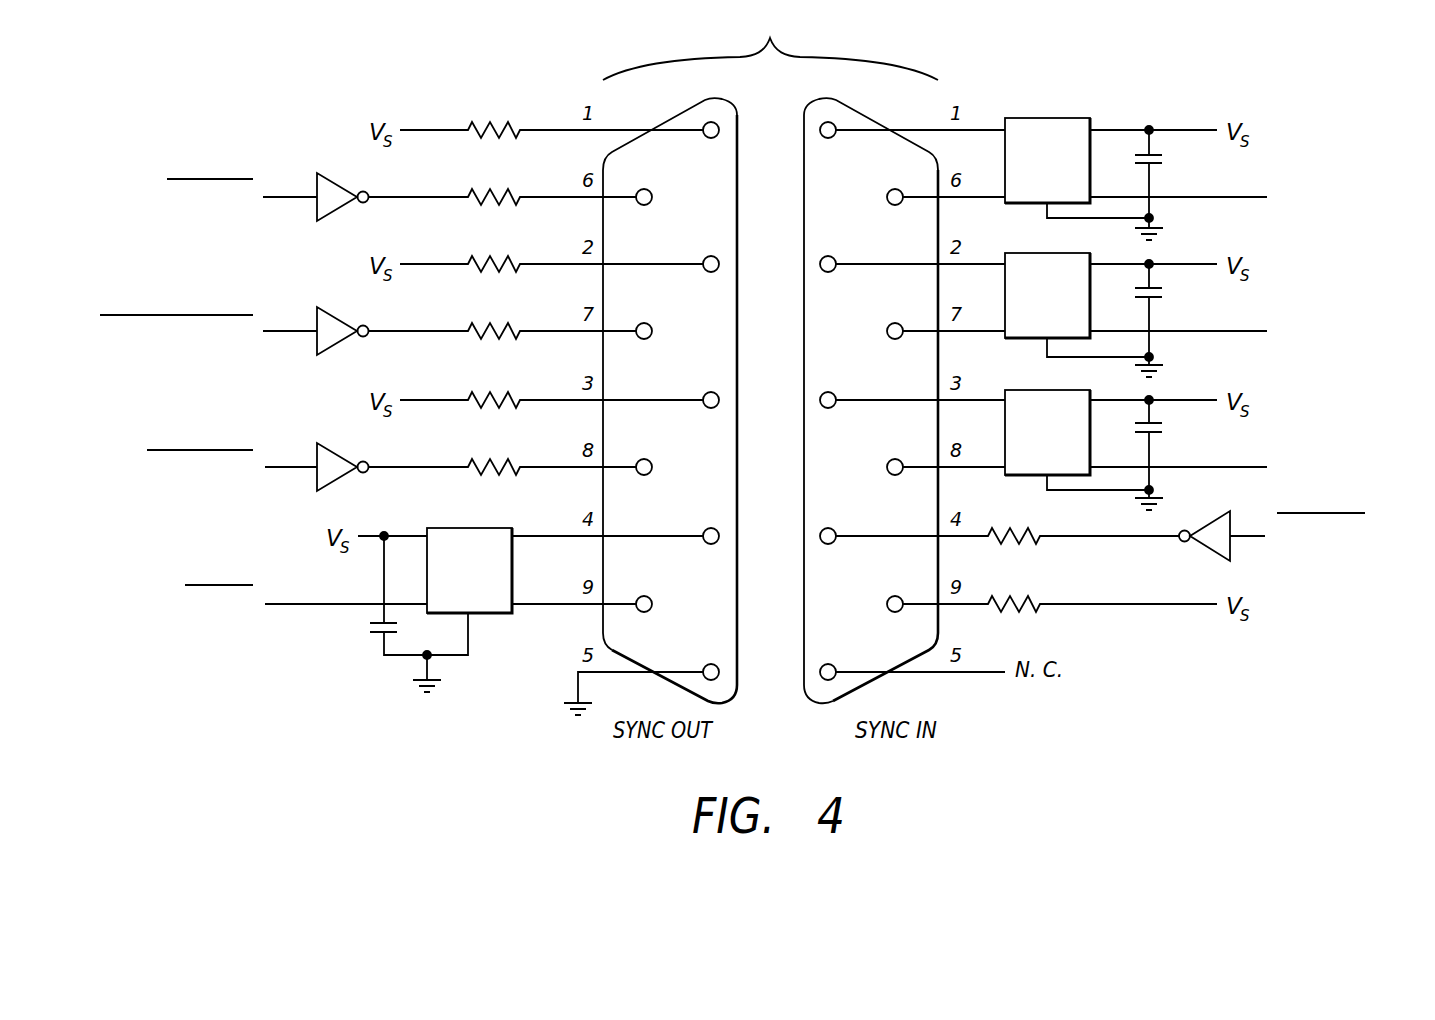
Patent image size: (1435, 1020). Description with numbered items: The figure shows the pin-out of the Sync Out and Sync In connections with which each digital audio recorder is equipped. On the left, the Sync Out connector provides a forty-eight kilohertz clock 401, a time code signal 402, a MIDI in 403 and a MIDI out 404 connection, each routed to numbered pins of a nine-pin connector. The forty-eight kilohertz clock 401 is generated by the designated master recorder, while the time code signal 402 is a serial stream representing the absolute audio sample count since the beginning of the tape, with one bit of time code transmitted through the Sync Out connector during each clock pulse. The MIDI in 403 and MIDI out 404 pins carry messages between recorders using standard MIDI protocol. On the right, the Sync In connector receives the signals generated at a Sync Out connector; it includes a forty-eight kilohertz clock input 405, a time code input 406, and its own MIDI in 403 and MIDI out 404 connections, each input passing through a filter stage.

The 48 kHz clock 401 is at (391, 471).
The time code signal 402 is at (368, 337).
The MIDI in connection 403 is at (766, 405).
The MIDI out connection 404 is at (767, 368).
The 48 kHz clock input 405 is at (1108, 450).
The time code input 406 is at (1123, 315).